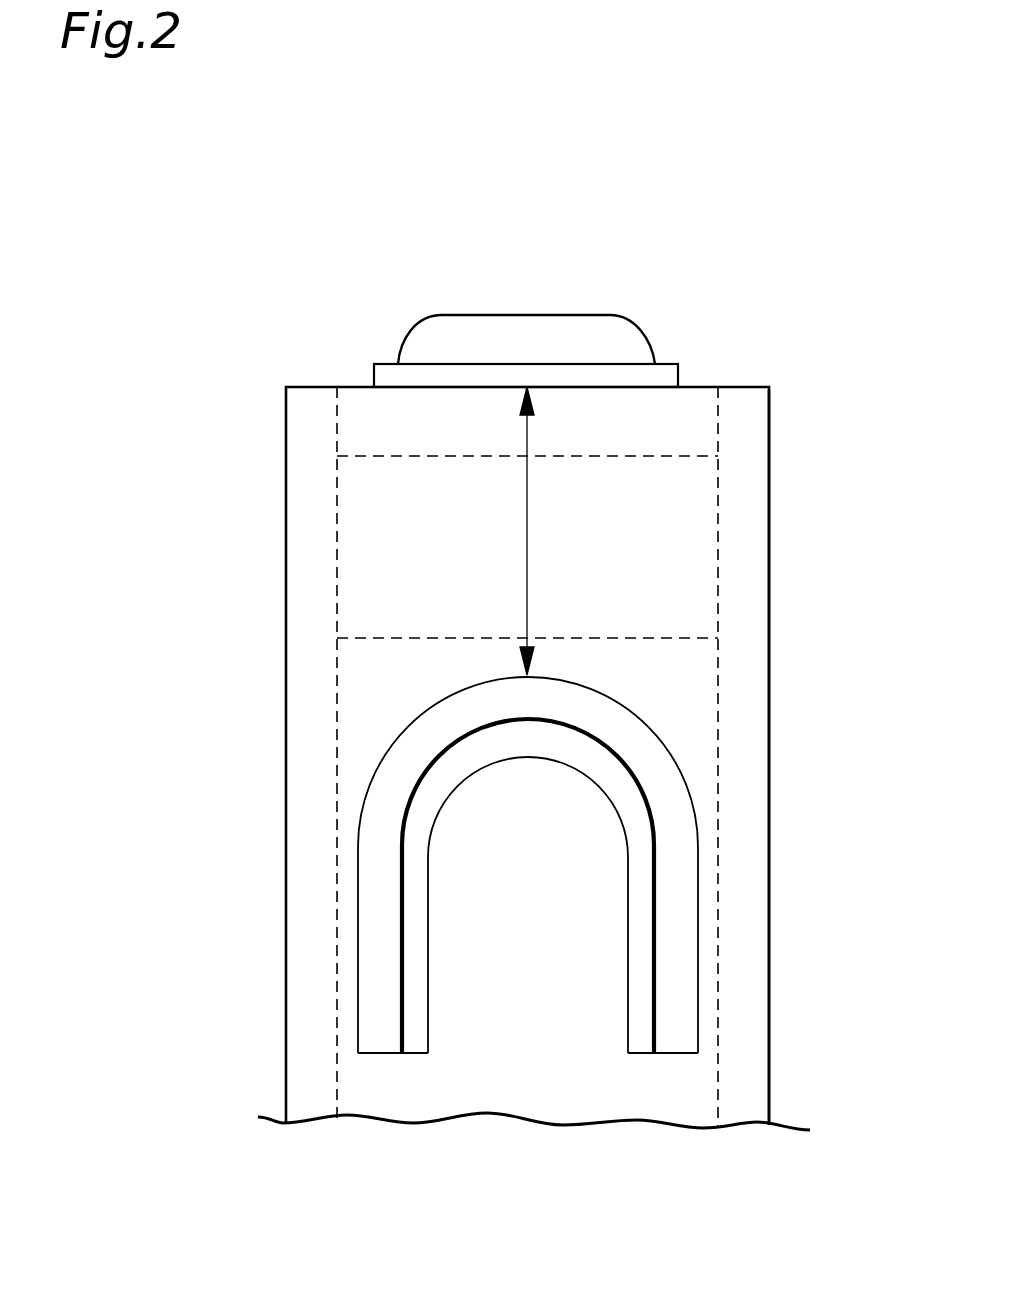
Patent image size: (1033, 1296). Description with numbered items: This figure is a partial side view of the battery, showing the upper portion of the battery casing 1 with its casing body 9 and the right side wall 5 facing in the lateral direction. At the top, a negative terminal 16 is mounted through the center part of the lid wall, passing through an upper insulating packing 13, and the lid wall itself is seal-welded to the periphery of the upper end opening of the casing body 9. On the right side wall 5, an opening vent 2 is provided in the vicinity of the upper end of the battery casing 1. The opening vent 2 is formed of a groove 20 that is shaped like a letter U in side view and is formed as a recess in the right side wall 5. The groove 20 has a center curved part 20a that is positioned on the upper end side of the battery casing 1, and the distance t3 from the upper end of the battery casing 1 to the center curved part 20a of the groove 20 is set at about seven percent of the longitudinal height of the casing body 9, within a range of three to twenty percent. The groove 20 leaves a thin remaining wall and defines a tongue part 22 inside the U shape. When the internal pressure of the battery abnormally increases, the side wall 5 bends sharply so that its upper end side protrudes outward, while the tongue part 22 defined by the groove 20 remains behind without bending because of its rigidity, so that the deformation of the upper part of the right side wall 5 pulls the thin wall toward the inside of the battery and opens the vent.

The battery casing 1 is at (245, 562).
The opening vent 2 is at (405, 665).
The right side wall 5 is at (677, 520).
The casing body 9 is at (800, 770).
The upper insulating packing 13 is at (667, 363).
The negative terminal 16 is at (608, 313).
The groove 20 is at (540, 812).
The center curved part 20a is at (558, 705).
The tongue part 22 is at (500, 810).
The distance from upper end of battery casing to groove t3 is at (527, 507).